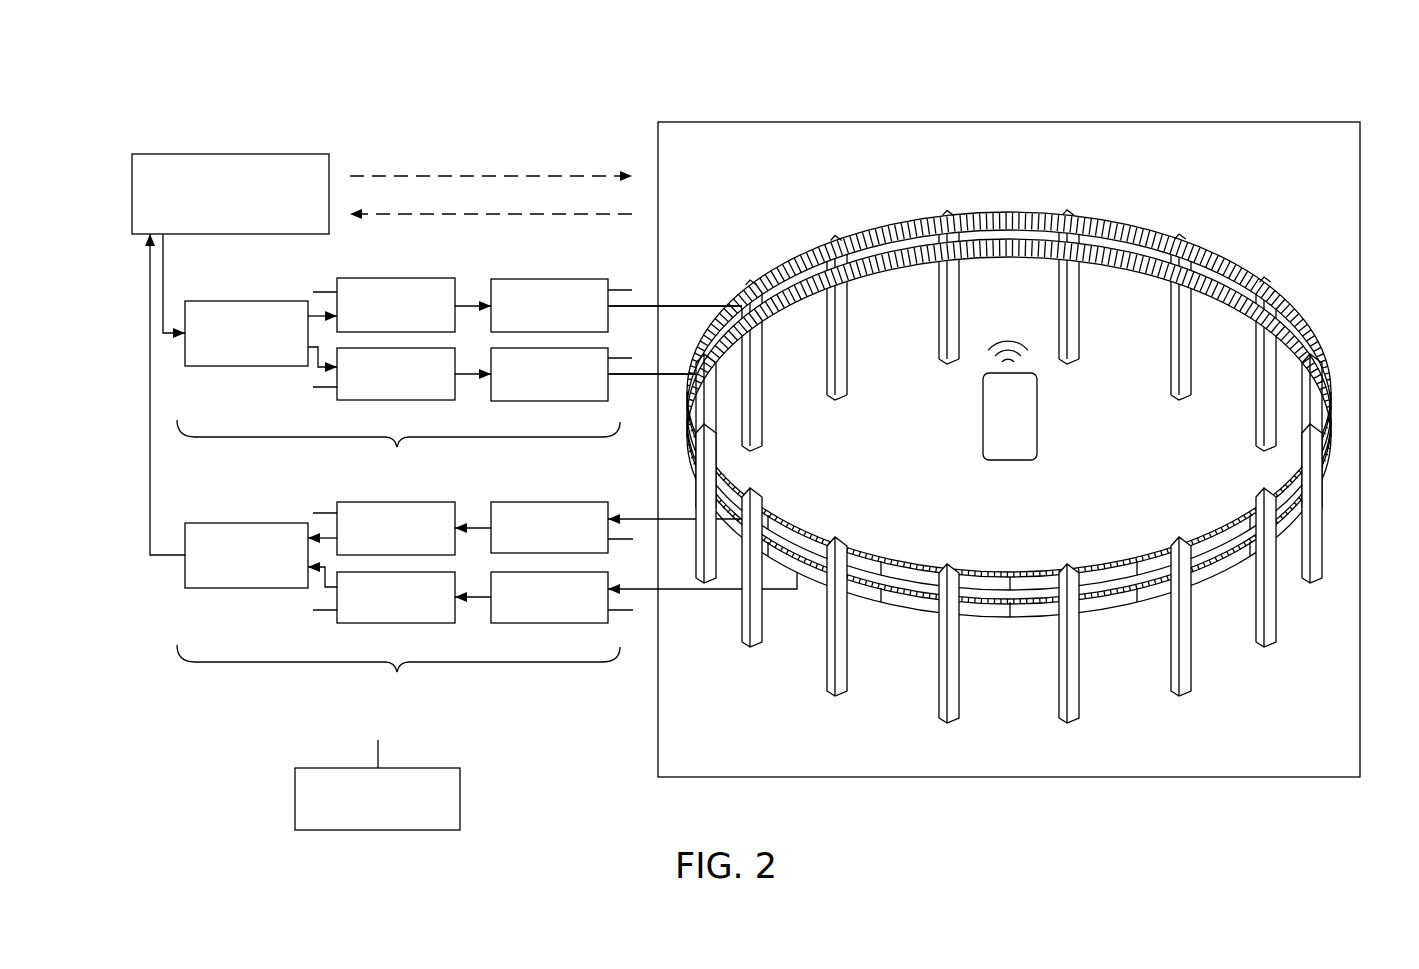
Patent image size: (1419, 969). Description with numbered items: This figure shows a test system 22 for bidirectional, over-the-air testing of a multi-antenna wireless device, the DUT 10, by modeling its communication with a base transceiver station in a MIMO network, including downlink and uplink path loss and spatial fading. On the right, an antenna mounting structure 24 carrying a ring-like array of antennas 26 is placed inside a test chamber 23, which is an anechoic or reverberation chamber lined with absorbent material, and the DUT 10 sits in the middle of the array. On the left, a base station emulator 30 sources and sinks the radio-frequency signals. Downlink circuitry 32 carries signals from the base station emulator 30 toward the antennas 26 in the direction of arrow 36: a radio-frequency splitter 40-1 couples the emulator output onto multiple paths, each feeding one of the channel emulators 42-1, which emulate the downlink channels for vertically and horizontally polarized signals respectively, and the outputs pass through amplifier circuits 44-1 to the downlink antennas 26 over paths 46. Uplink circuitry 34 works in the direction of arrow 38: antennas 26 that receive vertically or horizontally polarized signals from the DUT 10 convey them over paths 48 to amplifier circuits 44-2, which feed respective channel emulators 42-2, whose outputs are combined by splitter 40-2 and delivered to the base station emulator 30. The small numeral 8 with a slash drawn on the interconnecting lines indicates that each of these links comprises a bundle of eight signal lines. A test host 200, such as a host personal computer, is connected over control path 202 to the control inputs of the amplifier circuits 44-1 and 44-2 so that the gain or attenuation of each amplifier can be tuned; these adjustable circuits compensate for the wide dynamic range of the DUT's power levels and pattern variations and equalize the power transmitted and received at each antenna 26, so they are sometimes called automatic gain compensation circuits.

The test system 22 is at (1193, 78).
The test chamber 23 is at (742, 122).
The antenna mounting structure 24 is at (1162, 222).
The antennas 26 is at (1053, 218).
The DUT 10 is at (1037, 390).
The base station emulator 30 is at (242, 154).
The arrow 36 is at (498, 175).
The arrow 38 is at (548, 214).
The radio-frequency splitter 40-1 is at (209, 367).
The radio-frequency splitter 40-2 is at (209, 588).
The channel emulators 42-1 is at (390, 278).
The channel emulators 42-2 is at (390, 502).
The amplifier circuits 44-1 is at (522, 279).
The amplifier circuits 44-2 is at (522, 502).
The downlink circuitry 32 is at (398, 448).
The uplink circuitry 34 is at (398, 673).
The paths 46 is at (698, 305).
The paths 48 is at (670, 518).
The eight signal lines 8 is at (465, 312).
The test host 200 is at (460, 798).
The control path 202 is at (326, 291).